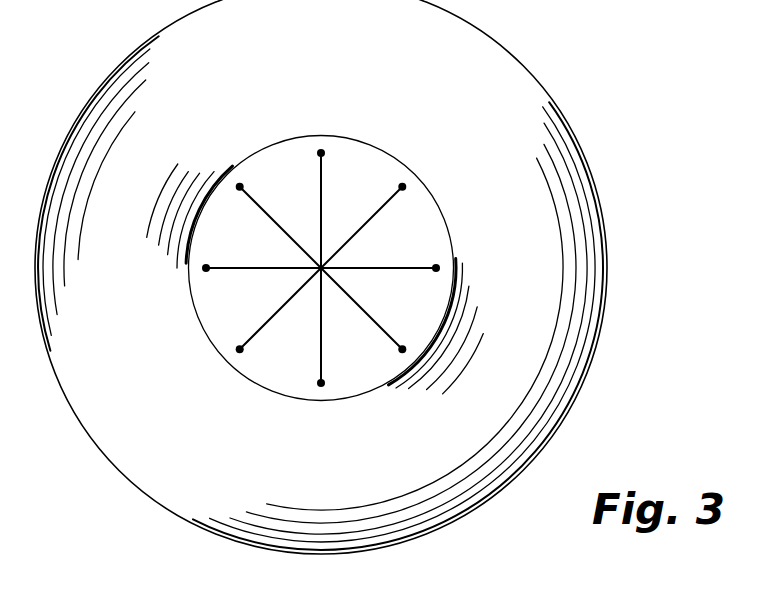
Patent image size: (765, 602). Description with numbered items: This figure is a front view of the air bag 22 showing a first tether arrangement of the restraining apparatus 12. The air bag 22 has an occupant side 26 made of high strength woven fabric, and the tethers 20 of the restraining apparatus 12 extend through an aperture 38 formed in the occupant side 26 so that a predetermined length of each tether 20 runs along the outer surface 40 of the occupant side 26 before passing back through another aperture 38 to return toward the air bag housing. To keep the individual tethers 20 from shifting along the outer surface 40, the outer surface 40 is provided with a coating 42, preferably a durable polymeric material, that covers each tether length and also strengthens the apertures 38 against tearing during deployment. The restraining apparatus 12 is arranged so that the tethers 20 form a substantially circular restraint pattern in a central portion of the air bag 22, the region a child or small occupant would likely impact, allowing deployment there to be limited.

The restraining apparatus 12 is at (358, 352).
The tethers 20 is at (413, 263).
The air bag 22 is at (606, 84).
The occupant side 26 is at (585, 293).
The aperture 38 is at (207, 262).
The outer surface 40 is at (325, 85).
The coating 42 is at (426, 185).